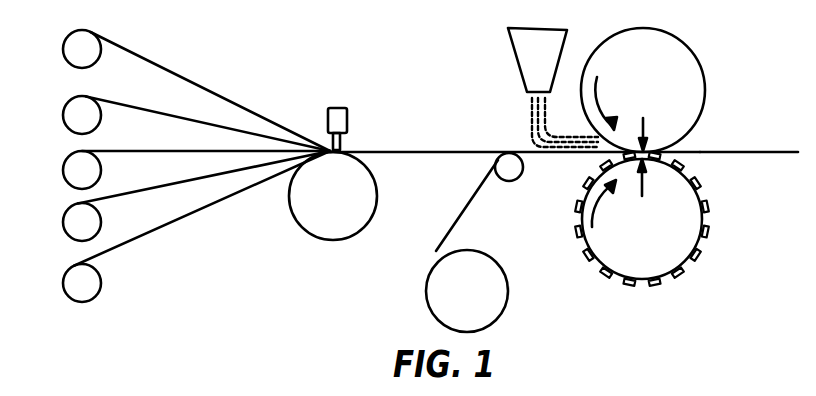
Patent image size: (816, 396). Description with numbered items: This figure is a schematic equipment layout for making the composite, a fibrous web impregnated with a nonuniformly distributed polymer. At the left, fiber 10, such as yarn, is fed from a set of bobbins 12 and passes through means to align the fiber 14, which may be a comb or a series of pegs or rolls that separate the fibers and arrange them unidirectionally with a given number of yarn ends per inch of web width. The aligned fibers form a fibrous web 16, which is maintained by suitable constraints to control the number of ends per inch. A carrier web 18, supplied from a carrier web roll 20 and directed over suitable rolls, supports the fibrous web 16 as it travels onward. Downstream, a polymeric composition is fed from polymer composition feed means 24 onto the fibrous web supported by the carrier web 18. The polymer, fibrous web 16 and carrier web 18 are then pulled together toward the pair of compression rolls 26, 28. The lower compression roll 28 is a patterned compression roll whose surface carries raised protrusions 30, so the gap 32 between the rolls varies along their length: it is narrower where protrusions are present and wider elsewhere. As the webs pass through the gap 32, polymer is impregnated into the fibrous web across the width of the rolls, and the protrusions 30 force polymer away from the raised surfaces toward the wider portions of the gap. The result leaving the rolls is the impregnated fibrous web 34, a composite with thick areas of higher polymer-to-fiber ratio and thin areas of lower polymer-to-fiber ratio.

The fiber 10 is at (142, 192).
The bobbins 12 is at (66, 268).
The means to align the fiber 14 is at (348, 118).
The fibrous web 16 is at (440, 151).
The carrier web 18 is at (468, 201).
The carrier web roll 20 is at (427, 292).
The polymer composition feed means 24 is at (507, 47).
The compression roll 26 is at (696, 56).
The patterned compression roll 28 is at (688, 268).
The protrusions 30 is at (707, 213).
The gap 32 is at (643, 126).
The impregnated fibrous web 34 is at (760, 153).